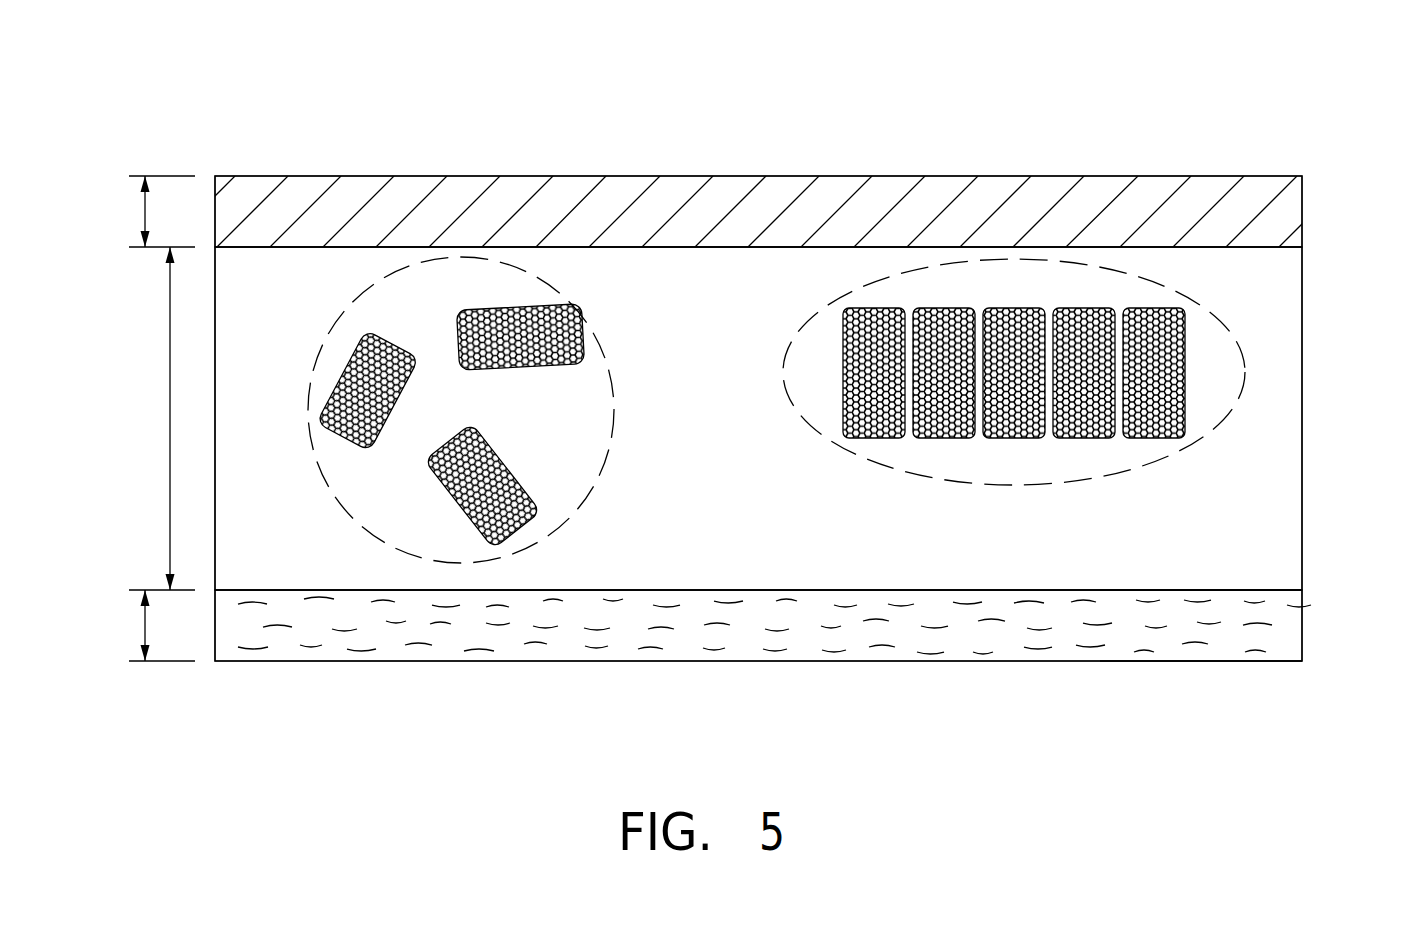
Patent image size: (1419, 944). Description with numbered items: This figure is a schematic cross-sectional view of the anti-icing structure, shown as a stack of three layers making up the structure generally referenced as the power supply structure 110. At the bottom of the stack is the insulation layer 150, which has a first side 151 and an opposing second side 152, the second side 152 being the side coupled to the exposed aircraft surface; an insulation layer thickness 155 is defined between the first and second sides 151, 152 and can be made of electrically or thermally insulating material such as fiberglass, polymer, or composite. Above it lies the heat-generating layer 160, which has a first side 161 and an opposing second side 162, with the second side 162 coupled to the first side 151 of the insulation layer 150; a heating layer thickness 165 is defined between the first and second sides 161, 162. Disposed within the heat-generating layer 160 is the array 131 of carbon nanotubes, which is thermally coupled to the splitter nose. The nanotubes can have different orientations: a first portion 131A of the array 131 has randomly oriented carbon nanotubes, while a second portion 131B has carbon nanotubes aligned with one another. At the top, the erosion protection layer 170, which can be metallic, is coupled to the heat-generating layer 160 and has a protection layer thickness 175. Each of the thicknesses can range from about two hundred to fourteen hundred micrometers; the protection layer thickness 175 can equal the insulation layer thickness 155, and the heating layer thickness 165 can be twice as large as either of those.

The power supply structure 110 is at (283, 108).
The erosion protection layer 170 is at (1268, 212).
The first side of the heat-generating layer 161 is at (1302, 240).
The heat-generating layer 160 is at (1268, 300).
The array of carbon nanotubes 131 is at (776, 480).
The first portion of the array 131A is at (600, 344).
The second portion of the array 131B is at (961, 482).
The second side of the heat-generating layer 162 is at (1273, 590).
The insulation layer 150 is at (1273, 648).
The first side of the insulation layer 151 is at (1164, 590).
The second side of the insulation layer 152 is at (1183, 661).
The protection layer thickness 175 is at (143, 211).
The heating layer thickness 165 is at (170, 430).
The insulation layer thickness 155 is at (145, 625).